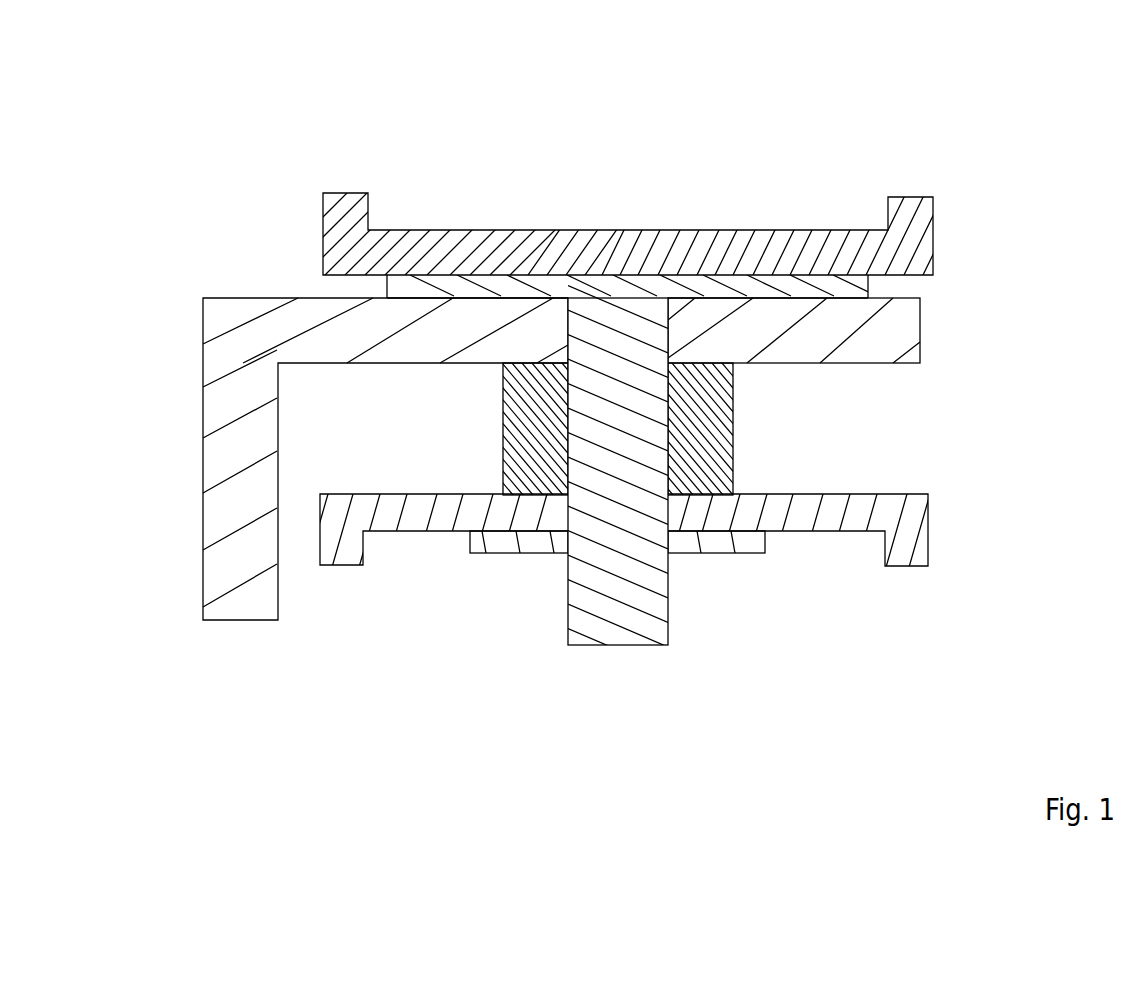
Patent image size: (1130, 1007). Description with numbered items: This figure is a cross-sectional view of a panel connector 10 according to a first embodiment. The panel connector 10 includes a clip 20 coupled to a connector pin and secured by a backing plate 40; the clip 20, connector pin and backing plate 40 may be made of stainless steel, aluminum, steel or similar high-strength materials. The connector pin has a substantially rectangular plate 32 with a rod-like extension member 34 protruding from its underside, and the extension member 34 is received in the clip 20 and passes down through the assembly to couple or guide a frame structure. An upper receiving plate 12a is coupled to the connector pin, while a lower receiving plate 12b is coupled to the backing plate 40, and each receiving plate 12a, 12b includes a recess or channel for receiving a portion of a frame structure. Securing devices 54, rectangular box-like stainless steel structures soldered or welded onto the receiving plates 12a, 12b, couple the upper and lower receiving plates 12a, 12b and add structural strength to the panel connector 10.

The panel connector 10 is at (972, 117).
The upper receiving plate 12a is at (938, 248).
The lower receiving plate 12b is at (937, 540).
The clip 20 is at (180, 563).
The plate 32 is at (877, 287).
The extension member 34 is at (672, 622).
The backing plate 40 is at (537, 560).
The securing device 54 is at (738, 440).